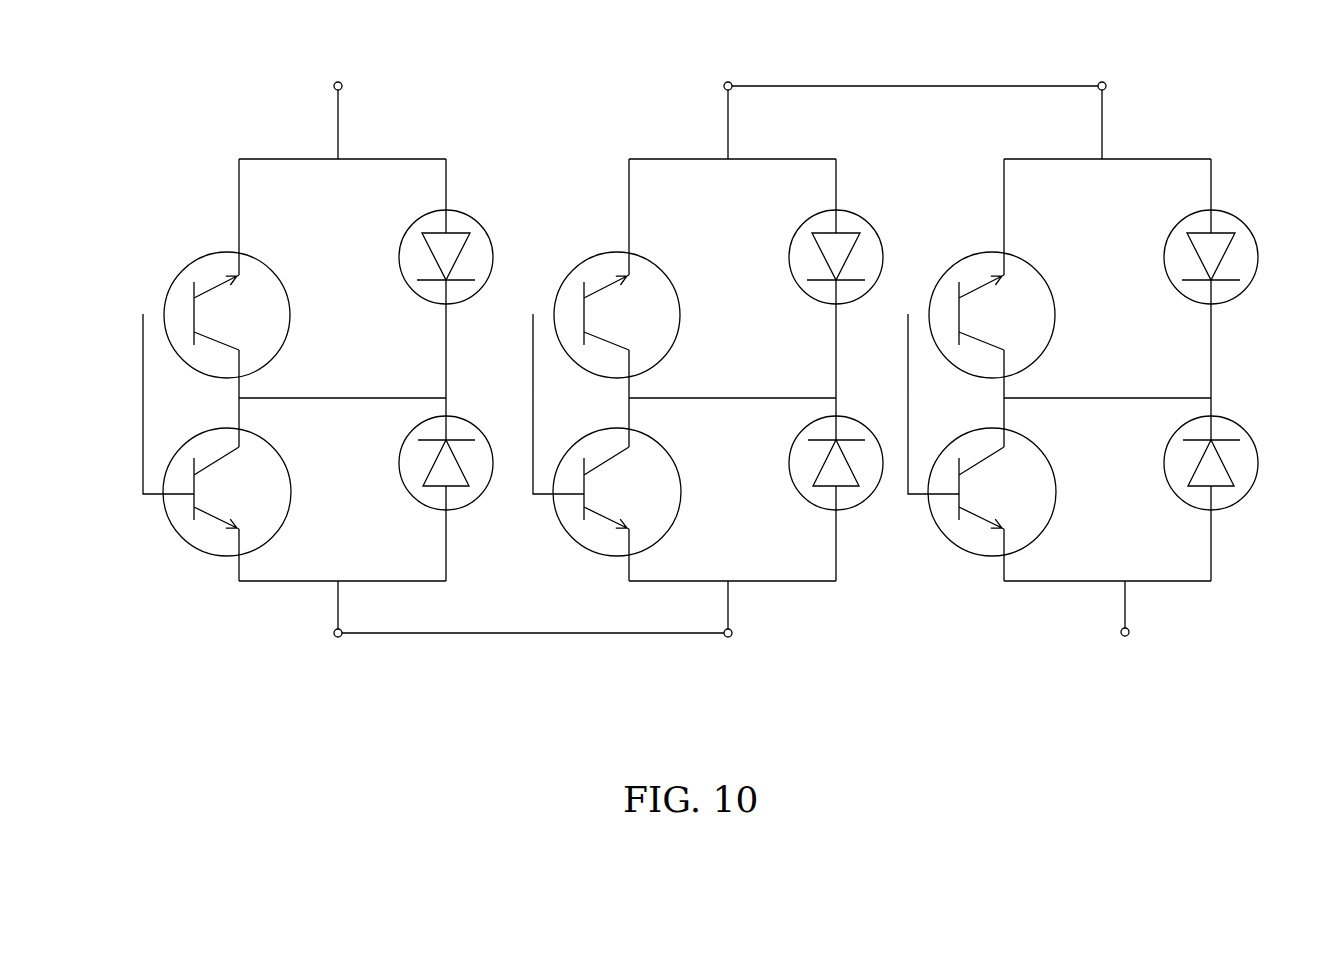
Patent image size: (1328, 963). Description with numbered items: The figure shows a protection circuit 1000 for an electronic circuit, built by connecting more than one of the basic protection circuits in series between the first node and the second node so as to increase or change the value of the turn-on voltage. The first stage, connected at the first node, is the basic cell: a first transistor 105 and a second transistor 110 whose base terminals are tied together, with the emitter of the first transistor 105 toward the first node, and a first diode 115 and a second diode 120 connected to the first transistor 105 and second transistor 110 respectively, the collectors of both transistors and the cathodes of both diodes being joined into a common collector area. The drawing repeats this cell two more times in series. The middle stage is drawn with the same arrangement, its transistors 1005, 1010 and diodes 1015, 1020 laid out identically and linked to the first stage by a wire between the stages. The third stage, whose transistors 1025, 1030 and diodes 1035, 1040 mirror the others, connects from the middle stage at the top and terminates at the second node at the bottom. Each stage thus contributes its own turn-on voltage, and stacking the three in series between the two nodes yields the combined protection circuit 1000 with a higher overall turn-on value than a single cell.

The protection circuit 1000 is at (1164, 112).
The first transistor 105 is at (250, 256).
The second transistor 110 is at (282, 467).
The first diode 115 is at (482, 230).
The second diode 120 is at (405, 488).
The third transistor 1005 is at (652, 262).
The fourth transistor 1010 is at (675, 483).
The third diode 1015 is at (858, 220).
The fourth diode 1020 is at (792, 463).
The fifth transistor 1025 is at (1023, 267).
The sixth transistor 1030 is at (1037, 453).
The fifth diode 1035 is at (1162, 270).
The sixth diode 1040 is at (1165, 463).